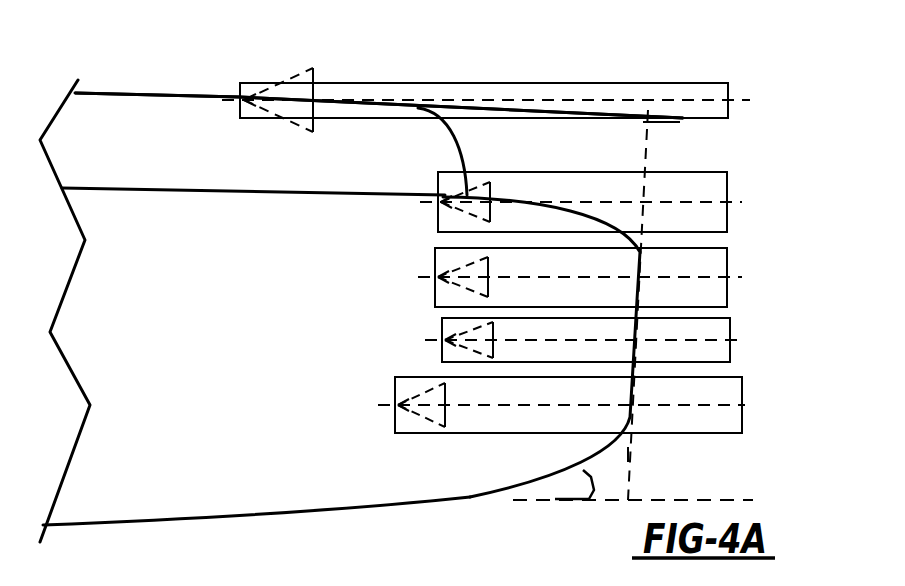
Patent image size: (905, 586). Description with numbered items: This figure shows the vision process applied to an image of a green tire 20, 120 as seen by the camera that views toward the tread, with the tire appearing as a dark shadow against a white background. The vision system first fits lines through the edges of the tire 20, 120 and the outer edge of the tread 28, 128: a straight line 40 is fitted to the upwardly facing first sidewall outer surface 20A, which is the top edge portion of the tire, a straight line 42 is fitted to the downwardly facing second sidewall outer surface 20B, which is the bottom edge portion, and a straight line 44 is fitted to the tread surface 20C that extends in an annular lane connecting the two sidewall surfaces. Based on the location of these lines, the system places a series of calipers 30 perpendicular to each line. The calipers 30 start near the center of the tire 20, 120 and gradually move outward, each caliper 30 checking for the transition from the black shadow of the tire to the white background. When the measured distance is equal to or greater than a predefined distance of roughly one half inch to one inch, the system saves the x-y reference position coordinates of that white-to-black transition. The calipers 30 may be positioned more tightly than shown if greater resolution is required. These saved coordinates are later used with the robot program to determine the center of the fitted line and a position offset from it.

The green tire 20 is at (361, 280).
The green tire 120 is at (153, 92).
The first sidewall outer surface 20A is at (133, 91).
The second sidewall outer surface 20B is at (323, 517).
The tread surface 20C is at (640, 297).
The tread 28 is at (550, 509).
The tread 128 is at (545, 500).
The calipers 30 is at (647, 82).
The straight line 40 is at (533, 113).
The straight line 42 is at (740, 497).
The straight line 44 is at (630, 453).